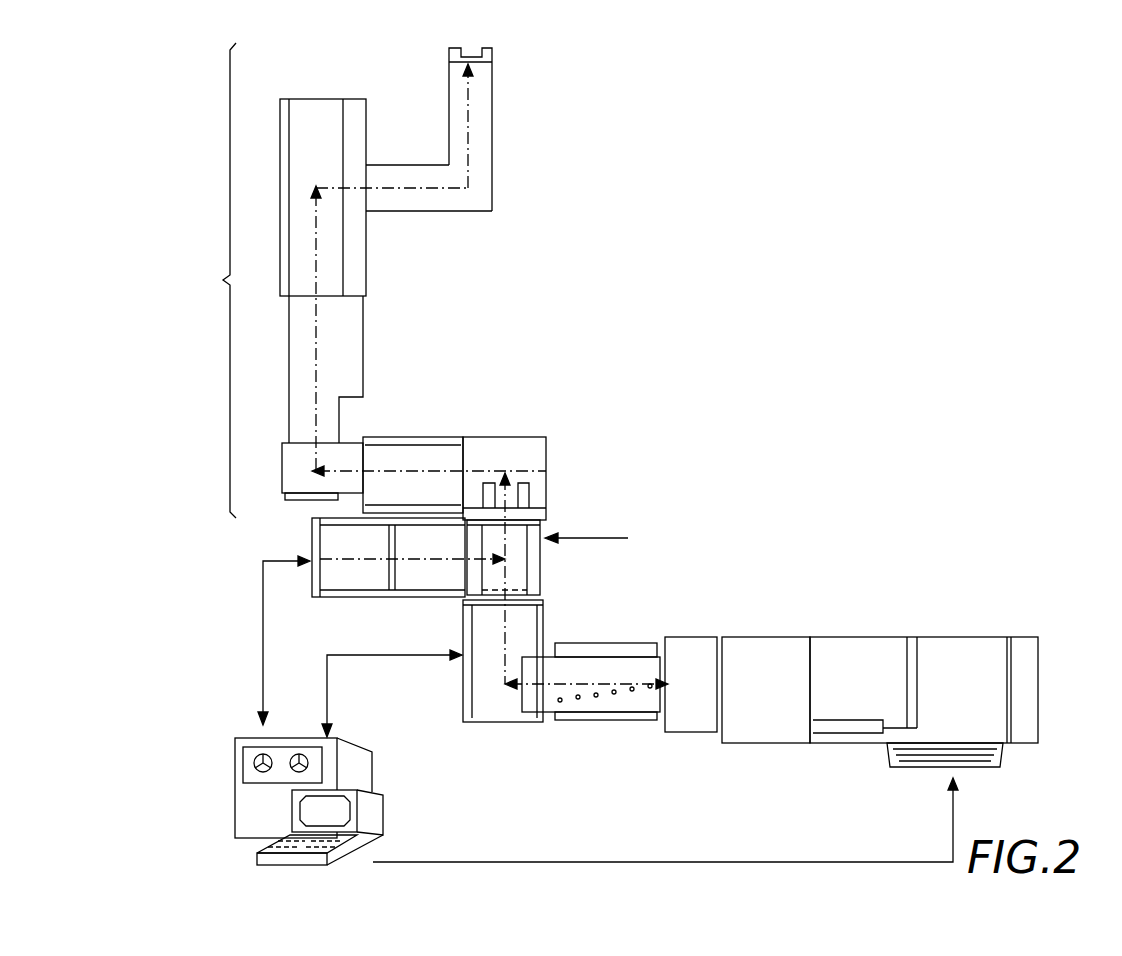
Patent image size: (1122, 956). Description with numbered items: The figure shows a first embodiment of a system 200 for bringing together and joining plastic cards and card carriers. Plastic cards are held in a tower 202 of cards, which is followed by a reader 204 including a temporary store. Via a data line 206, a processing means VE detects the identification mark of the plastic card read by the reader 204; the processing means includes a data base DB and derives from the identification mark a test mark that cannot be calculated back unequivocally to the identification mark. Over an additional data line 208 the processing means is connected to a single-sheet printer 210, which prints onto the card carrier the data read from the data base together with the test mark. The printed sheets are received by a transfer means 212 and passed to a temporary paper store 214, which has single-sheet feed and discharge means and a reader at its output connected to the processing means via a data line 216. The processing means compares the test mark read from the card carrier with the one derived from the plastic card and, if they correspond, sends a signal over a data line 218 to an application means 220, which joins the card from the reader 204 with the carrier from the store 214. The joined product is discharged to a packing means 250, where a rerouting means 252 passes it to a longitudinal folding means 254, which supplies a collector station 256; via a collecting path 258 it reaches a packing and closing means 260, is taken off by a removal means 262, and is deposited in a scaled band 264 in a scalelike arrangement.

The system 200 is at (758, 448).
The tower of cards 202 is at (360, 573).
The reader 204 is at (428, 573).
The data line 206 is at (263, 598).
The additional data line 208 is at (683, 858).
The single-sheet printer 210 is at (878, 653).
The transfer means 212 is at (607, 703).
The temporary paper store 214 is at (502, 700).
The data line 216 is at (408, 660).
The data line 218 is at (595, 535).
The application means 220 is at (530, 577).
The packing means 250 is at (207, 280).
The rerouting means 252 is at (515, 455).
The longitudinal folding means 254 is at (423, 457).
The collector station 256 is at (317, 482).
The collecting path 258 is at (325, 347).
The packing and closing means 260 is at (317, 130).
The removal means 262 is at (417, 200).
The scaled band 264 is at (482, 85).